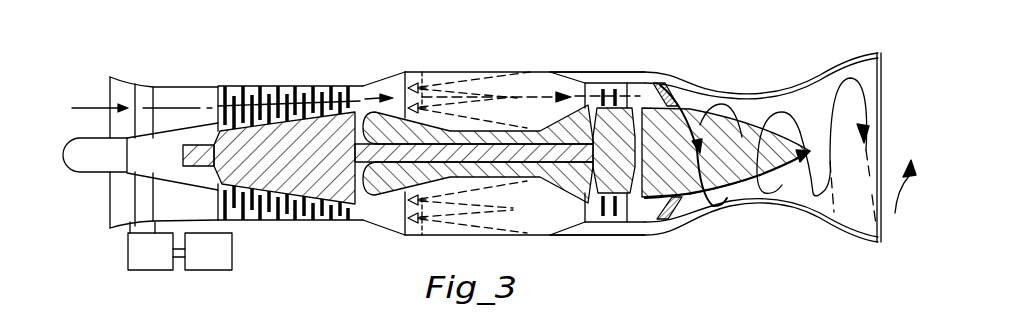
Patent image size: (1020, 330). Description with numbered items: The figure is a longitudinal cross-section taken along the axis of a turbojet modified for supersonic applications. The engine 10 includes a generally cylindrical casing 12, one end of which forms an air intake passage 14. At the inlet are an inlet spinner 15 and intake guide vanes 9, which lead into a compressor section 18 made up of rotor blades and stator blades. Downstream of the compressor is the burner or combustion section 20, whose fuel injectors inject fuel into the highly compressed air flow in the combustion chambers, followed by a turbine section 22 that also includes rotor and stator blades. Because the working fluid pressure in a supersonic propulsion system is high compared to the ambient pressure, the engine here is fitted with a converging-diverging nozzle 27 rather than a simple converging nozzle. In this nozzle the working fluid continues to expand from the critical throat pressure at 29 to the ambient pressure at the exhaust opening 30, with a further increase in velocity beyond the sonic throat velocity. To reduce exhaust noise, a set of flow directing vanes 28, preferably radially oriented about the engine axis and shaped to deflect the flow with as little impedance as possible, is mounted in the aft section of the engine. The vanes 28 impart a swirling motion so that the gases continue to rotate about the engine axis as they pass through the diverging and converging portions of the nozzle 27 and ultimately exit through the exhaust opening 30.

The intake guide vanes 9 is at (147, 97).
The engine 10 is at (374, 233).
The casing 12 is at (368, 81).
The air intake passage 14 is at (123, 210).
The inlet spinner 15 is at (78, 172).
The compressor section 18 is at (286, 79).
The combustion section 20 is at (478, 74).
The turbine section 22 is at (620, 84).
The converging-diverging nozzle 27 is at (822, 62).
The flow directing vanes 28 is at (677, 222).
The critical throat 29 is at (770, 192).
The exhaust opening 30 is at (882, 228).